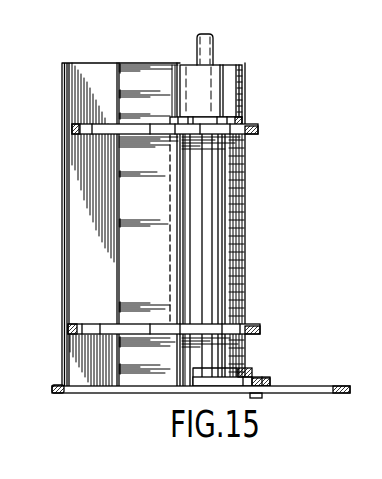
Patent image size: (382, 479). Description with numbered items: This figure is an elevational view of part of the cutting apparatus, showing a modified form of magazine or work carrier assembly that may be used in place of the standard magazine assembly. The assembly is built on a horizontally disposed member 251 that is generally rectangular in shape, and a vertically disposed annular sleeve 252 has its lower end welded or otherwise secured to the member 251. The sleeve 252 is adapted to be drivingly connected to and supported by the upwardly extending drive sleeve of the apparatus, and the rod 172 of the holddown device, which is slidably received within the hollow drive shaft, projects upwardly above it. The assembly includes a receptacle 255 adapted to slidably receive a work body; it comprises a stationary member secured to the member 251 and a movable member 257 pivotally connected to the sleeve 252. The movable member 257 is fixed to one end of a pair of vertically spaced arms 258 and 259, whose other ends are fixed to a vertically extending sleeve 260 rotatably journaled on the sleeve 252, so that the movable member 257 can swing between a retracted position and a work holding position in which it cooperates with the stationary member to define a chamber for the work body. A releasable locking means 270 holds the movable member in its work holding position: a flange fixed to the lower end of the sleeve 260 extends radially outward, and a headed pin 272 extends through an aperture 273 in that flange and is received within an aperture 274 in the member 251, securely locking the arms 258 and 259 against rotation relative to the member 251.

The rod 172 is at (214, 56).
The horizontally disposed member 251 is at (57, 386).
The annular sleeve 252 is at (223, 98).
The receptacle 255 is at (129, 61).
The movable member 257 is at (97, 73).
The arm 258 is at (261, 128).
The arm 259 is at (257, 325).
The vertically extending sleeve 260 is at (243, 172).
The releasable locking means 270 is at (260, 356).
The headed pin 272 is at (253, 372).
The aperture 273 is at (268, 381).
The aperture 274 is at (256, 398).